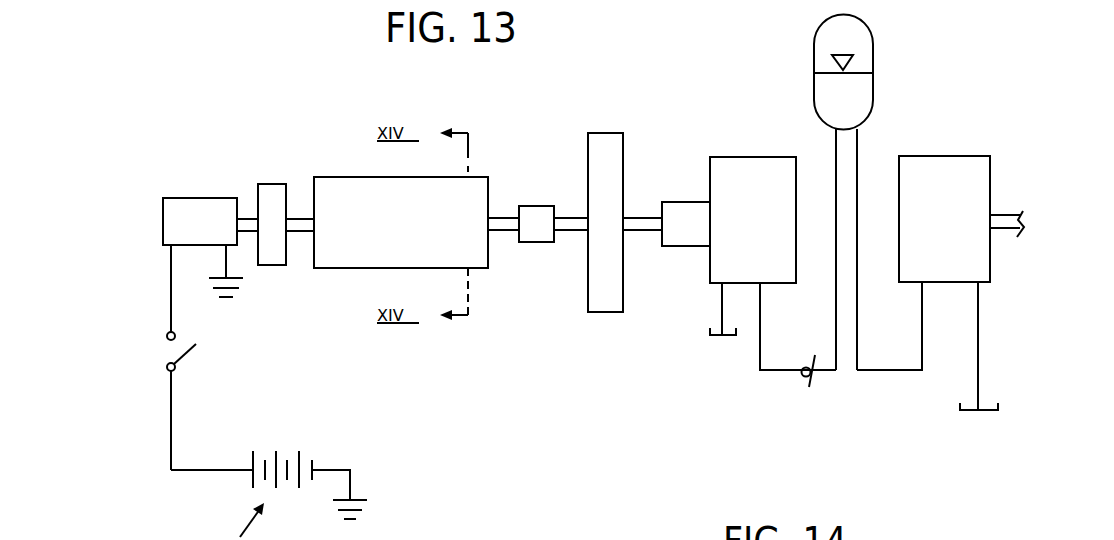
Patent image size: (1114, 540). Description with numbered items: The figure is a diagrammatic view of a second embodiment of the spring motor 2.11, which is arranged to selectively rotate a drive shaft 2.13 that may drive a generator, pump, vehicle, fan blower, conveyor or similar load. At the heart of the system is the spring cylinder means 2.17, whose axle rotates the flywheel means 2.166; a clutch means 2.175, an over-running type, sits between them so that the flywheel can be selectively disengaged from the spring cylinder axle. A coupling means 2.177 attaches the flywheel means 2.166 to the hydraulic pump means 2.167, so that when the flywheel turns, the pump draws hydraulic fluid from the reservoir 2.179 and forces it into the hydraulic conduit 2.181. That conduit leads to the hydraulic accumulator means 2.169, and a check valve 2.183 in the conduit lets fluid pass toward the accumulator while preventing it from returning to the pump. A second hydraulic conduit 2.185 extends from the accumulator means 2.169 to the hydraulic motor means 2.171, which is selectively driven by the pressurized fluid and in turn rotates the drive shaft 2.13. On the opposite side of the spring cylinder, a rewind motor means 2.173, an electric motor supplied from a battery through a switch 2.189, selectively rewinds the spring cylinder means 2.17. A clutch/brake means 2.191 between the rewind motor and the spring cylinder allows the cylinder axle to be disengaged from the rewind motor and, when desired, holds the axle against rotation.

The spring motor 2.11 is at (226, 109).
The drive shaft 2.13 is at (1018, 209).
The spring cylinder means 2.17 is at (345, 257).
The flywheel means 2.166 is at (606, 152).
The hydraulic pump means 2.167 is at (753, 175).
The hydraulic accumulator means 2.169 is at (862, 50).
The hydraulic motor means 2.171 is at (972, 168).
The rewind motor means 2.173 is at (202, 172).
The clutch means 2.175 is at (534, 220).
The coupling means 2.177 is at (697, 235).
The reservoir 2.179 is at (724, 345).
The hydraulic conduit 2.181 is at (760, 362).
The check valve 2.183 is at (801, 381).
The hydraulic conduit 2.185 is at (928, 357).
The switch 2.189 is at (206, 373).
The clutch/brake means 2.191 is at (270, 197).